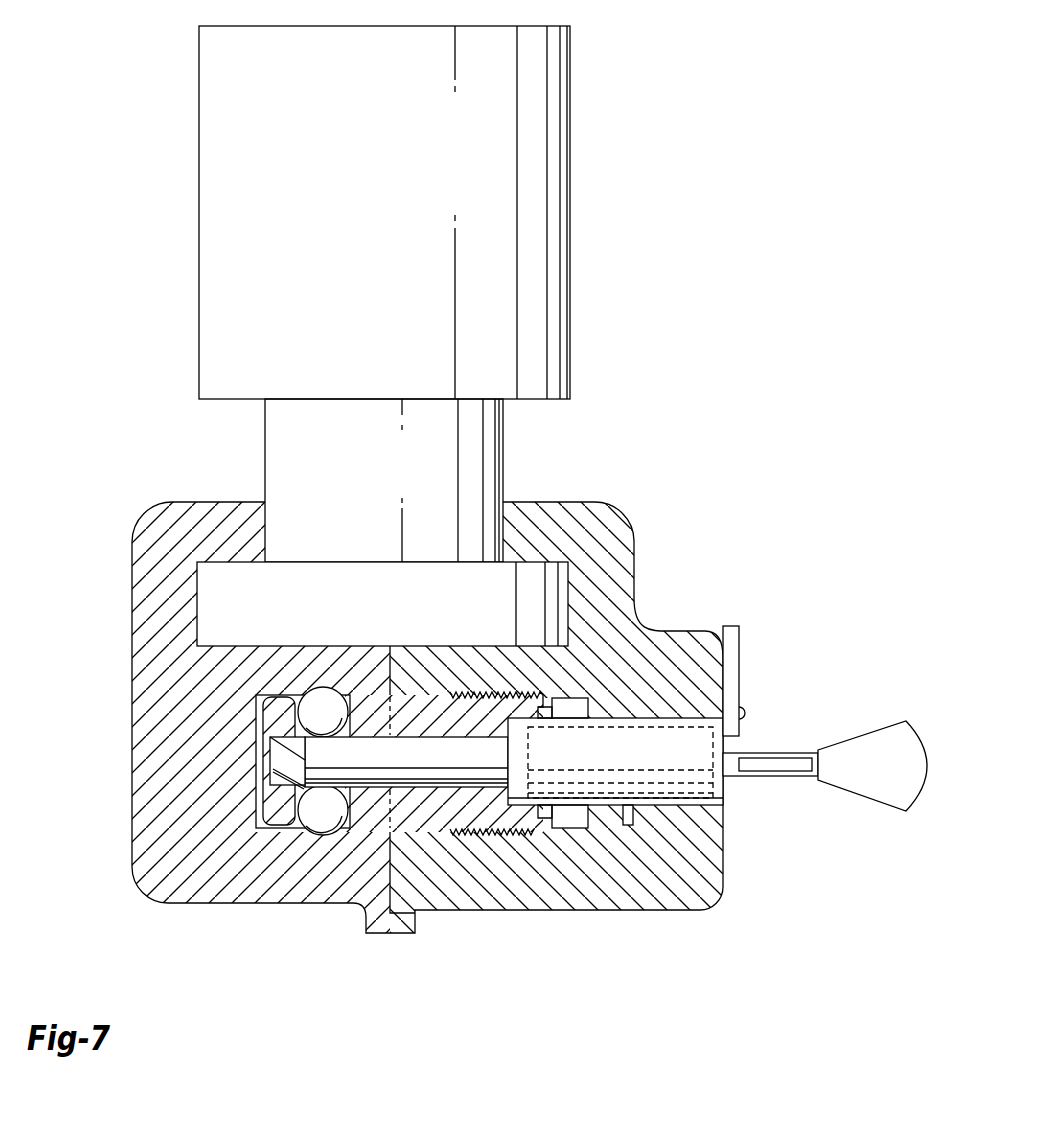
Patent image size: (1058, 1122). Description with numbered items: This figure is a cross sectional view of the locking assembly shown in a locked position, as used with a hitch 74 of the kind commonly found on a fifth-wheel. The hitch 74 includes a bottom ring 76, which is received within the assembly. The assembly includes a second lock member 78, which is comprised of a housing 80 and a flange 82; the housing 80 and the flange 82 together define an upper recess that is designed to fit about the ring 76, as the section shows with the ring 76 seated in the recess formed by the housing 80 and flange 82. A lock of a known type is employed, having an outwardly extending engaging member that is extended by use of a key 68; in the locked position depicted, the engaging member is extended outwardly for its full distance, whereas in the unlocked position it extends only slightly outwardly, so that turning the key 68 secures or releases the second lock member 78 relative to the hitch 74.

The hitch 74 is at (590, 279).
The bottom ring 76 is at (408, 614).
The second lock member 78 is at (382, 677).
The housing 80 is at (155, 858).
The flange 82 is at (205, 507).
The key 68 is at (900, 775).